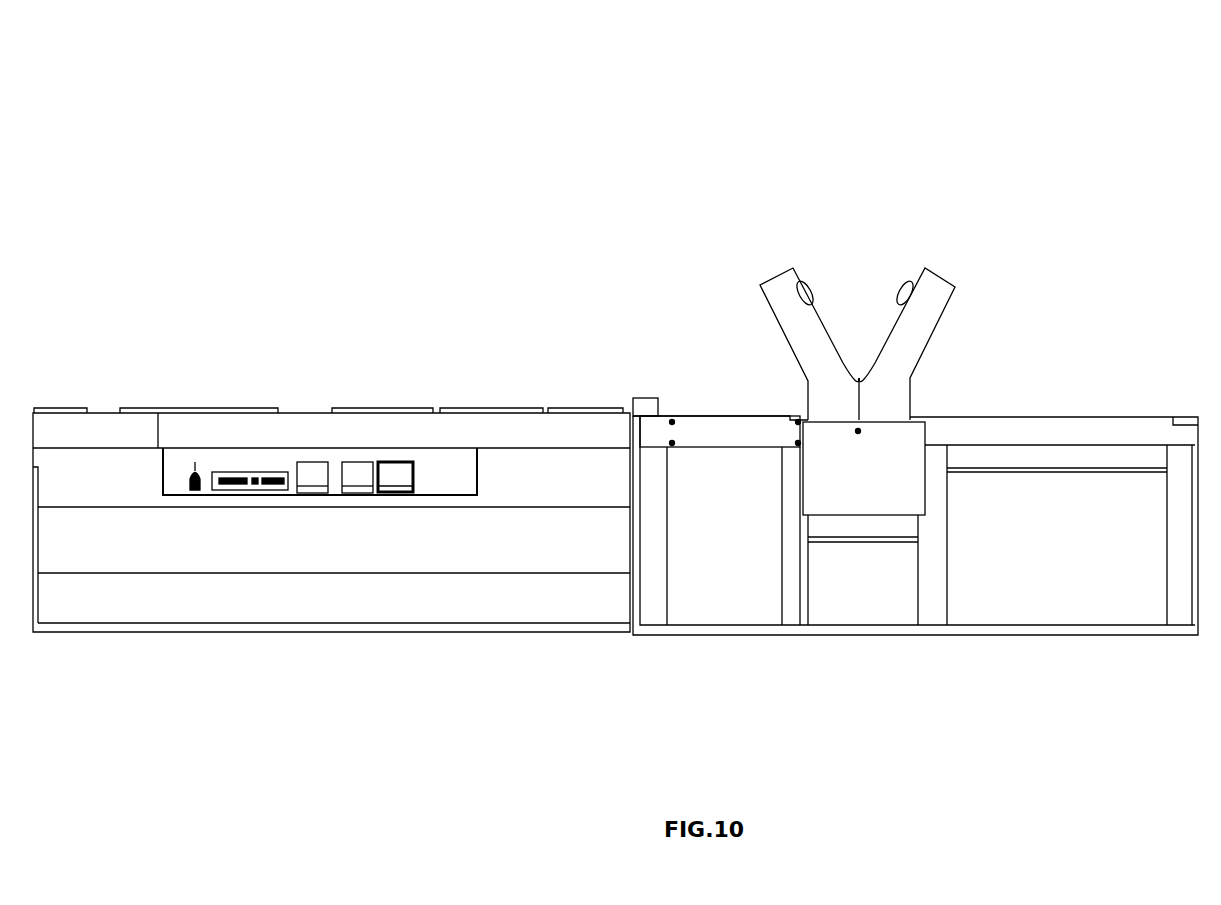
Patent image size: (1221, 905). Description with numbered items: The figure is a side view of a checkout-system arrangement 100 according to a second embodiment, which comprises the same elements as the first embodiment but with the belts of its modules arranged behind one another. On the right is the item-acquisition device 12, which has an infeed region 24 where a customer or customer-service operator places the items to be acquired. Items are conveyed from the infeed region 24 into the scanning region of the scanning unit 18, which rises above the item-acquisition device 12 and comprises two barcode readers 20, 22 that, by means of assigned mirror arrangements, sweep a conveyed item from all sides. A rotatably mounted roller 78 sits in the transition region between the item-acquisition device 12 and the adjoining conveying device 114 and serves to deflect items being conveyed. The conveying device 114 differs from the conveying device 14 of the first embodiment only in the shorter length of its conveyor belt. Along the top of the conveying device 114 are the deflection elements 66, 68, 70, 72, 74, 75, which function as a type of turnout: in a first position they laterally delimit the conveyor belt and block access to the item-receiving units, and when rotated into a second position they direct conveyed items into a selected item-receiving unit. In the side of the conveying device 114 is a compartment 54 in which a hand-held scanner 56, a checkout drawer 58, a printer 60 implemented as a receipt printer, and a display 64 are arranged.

The checkout-system arrangement 100 is at (1038, 145).
The item-acquisition device 12 is at (903, 666).
The conveying device 14 is at (582, 350).
The scanning unit 18 is at (850, 265).
The barcode reader 20 is at (775, 285).
The barcode reader 22 is at (940, 285).
The infeed region 24 is at (1070, 398).
The compartment 54 is at (433, 468).
The hand-held scanner 56 is at (196, 492).
The checkout drawer 58 is at (258, 492).
The printer 60 is at (312, 492).
The display 64 is at (400, 492).
The deflection element 66 is at (60, 408).
The deflection element 68 is at (175, 408).
The deflection element 70 is at (240, 408).
The deflection element 72 is at (377, 408).
The deflection element 74 is at (472, 408).
The deflection element 75 is at (589, 408).
The roller 78 is at (642, 402).
The conveying device 114 is at (353, 666).